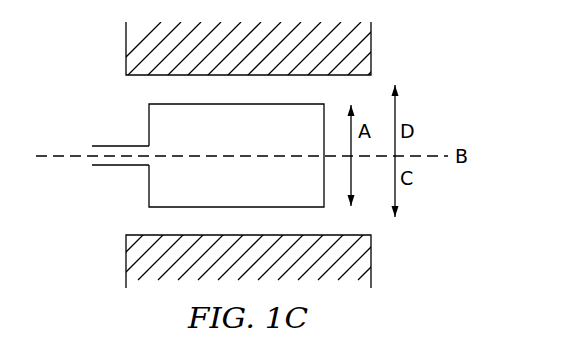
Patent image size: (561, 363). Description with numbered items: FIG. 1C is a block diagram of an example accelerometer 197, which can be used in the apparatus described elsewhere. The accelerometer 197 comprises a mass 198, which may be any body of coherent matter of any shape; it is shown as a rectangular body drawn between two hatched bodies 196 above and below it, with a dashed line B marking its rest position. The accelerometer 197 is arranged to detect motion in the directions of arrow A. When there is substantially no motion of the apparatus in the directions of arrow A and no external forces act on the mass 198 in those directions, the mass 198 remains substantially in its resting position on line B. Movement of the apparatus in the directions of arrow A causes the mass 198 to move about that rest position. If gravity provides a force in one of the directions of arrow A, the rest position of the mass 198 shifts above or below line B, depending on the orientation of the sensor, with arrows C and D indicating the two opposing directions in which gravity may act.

The hatched body / wall 196 is at (126, 260).
The accelerometer 197 is at (119, 220).
The mass 198 is at (149, 124).